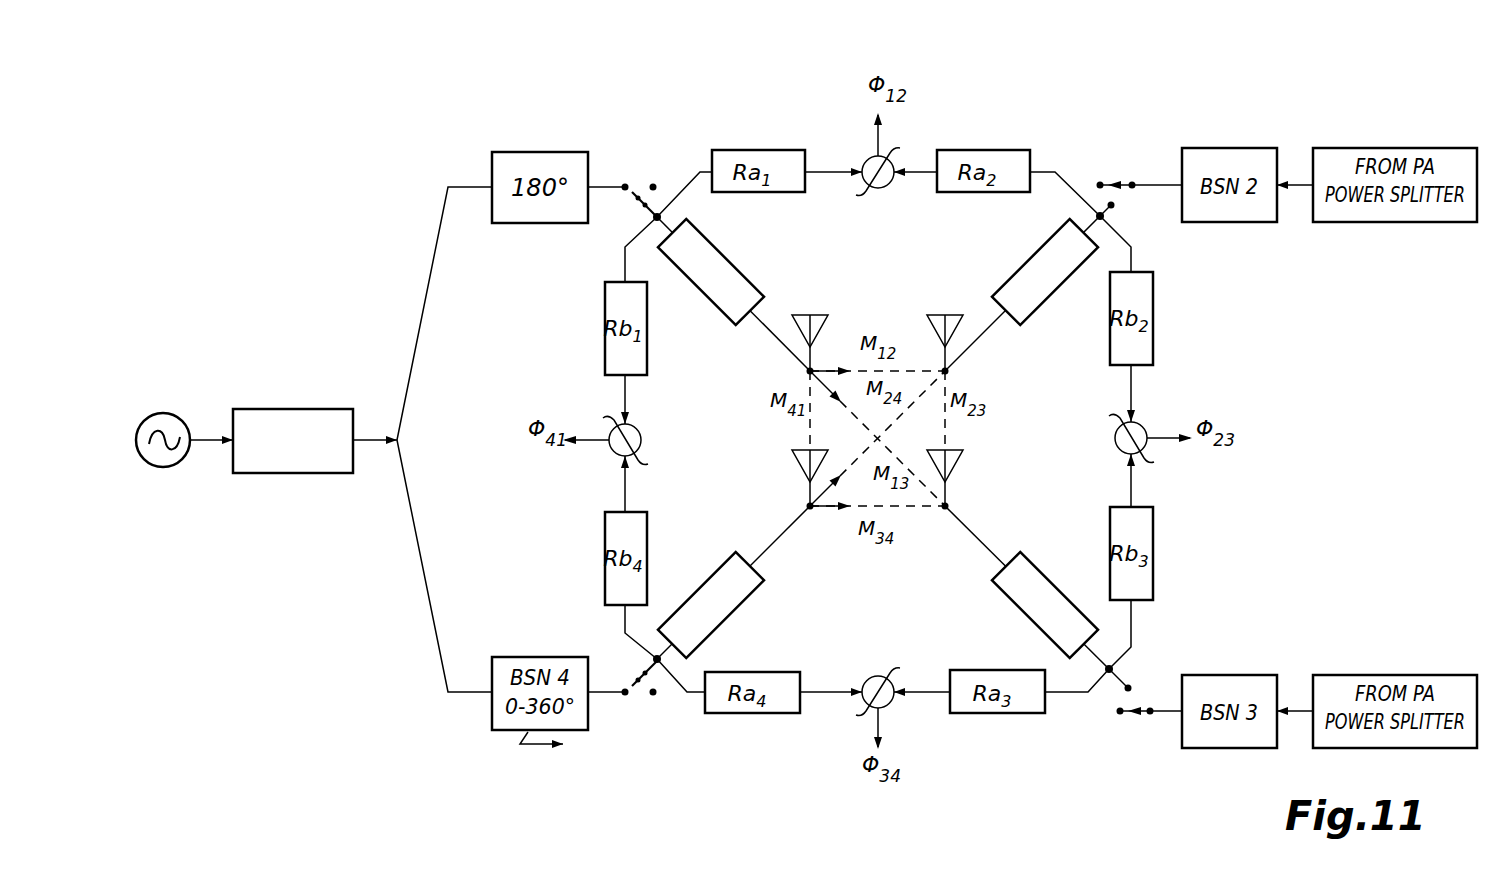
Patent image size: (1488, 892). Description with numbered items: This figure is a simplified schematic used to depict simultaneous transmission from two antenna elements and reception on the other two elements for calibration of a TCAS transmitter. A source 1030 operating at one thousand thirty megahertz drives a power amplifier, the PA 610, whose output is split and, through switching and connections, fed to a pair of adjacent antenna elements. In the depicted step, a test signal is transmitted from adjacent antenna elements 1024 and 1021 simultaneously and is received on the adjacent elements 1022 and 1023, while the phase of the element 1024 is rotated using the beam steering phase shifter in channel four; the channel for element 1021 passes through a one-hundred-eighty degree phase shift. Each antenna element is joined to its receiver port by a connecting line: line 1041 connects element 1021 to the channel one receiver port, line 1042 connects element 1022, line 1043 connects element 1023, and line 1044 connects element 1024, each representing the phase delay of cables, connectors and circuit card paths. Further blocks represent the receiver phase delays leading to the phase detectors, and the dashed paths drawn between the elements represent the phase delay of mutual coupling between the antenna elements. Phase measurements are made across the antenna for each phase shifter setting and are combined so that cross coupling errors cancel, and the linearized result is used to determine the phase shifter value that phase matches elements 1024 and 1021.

The 1030 MHz source 1030 is at (168, 413).
The PA 610 is at (248, 409).
The antenna element J1 1021 is at (813, 314).
The antenna element J2 1022 is at (935, 314).
The antenna element J3 1023 is at (963, 451).
The antenna element J4 1024 is at (792, 451).
The connecting line 1041 is at (727, 262).
The connecting line 1042 is at (1037, 252).
The connecting line 1043 is at (997, 590).
The connecting line 1044 is at (745, 600).